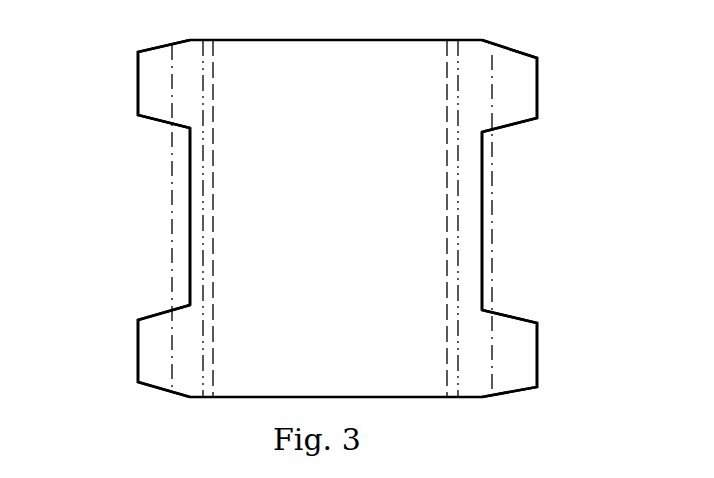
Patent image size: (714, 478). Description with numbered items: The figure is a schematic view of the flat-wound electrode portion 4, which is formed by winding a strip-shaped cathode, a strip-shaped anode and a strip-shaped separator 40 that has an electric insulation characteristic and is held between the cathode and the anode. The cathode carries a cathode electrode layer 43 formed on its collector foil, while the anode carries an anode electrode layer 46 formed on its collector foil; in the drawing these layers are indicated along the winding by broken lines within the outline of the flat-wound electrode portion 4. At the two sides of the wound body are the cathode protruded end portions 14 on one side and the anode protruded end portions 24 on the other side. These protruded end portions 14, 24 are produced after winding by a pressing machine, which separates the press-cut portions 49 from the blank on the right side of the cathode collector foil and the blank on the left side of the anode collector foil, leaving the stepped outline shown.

The flat-wound electrode portion 4 is at (483, 192).
The cathode protruded end portions 14 is at (512, 80).
The anode protruded end portions 24 is at (160, 80).
The separator 40 is at (172, 108).
The cathode electrode layer 43 is at (458, 222).
The anode electrode layer 46 is at (202, 183).
The press-cut portions 49 is at (165, 273).